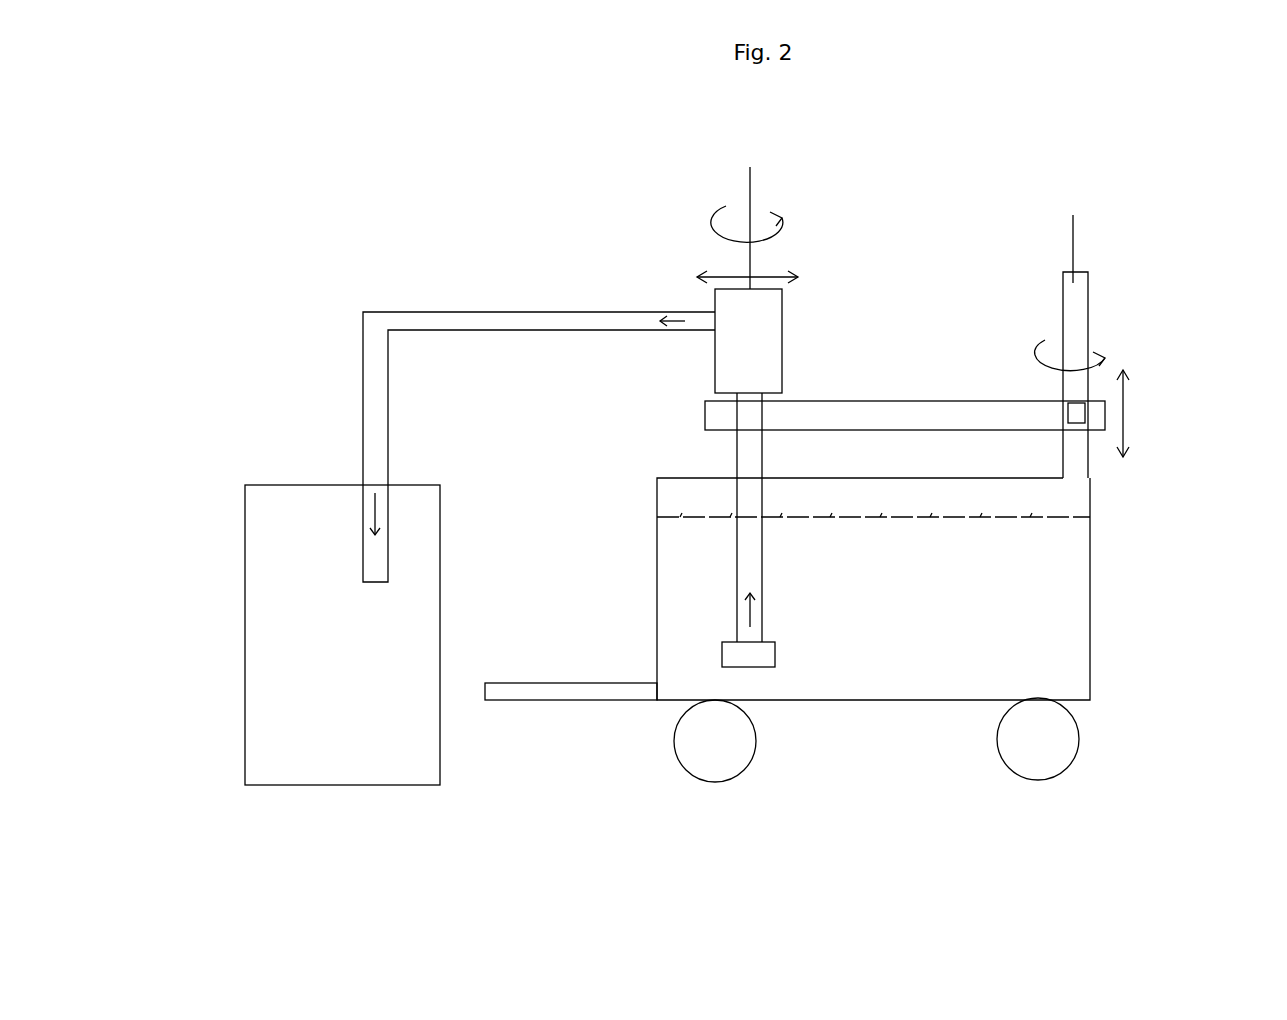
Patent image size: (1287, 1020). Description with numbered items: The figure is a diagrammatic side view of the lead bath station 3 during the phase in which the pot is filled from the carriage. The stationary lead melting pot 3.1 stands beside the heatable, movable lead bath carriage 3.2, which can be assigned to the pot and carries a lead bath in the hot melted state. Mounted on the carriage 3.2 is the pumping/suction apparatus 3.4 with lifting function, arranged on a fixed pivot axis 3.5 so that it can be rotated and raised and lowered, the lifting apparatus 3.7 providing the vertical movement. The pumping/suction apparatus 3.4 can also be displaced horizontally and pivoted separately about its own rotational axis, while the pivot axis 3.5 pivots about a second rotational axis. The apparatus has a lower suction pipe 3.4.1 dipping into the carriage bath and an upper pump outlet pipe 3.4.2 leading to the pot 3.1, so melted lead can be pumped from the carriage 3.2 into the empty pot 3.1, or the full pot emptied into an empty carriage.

The lead bath station 3 is at (247, 757).
The lead melting pot 3.1 is at (315, 697).
The lead bath carriage 3.2 is at (1038, 642).
The pumping/suction apparatus 3.4 is at (765, 325).
The suction pipe 3.4.1 is at (748, 550).
The pump outlet pipe 3.4.2 is at (370, 358).
The pivot axis 3.5 is at (1077, 303).
The lifting apparatus 3.7 is at (1077, 408).